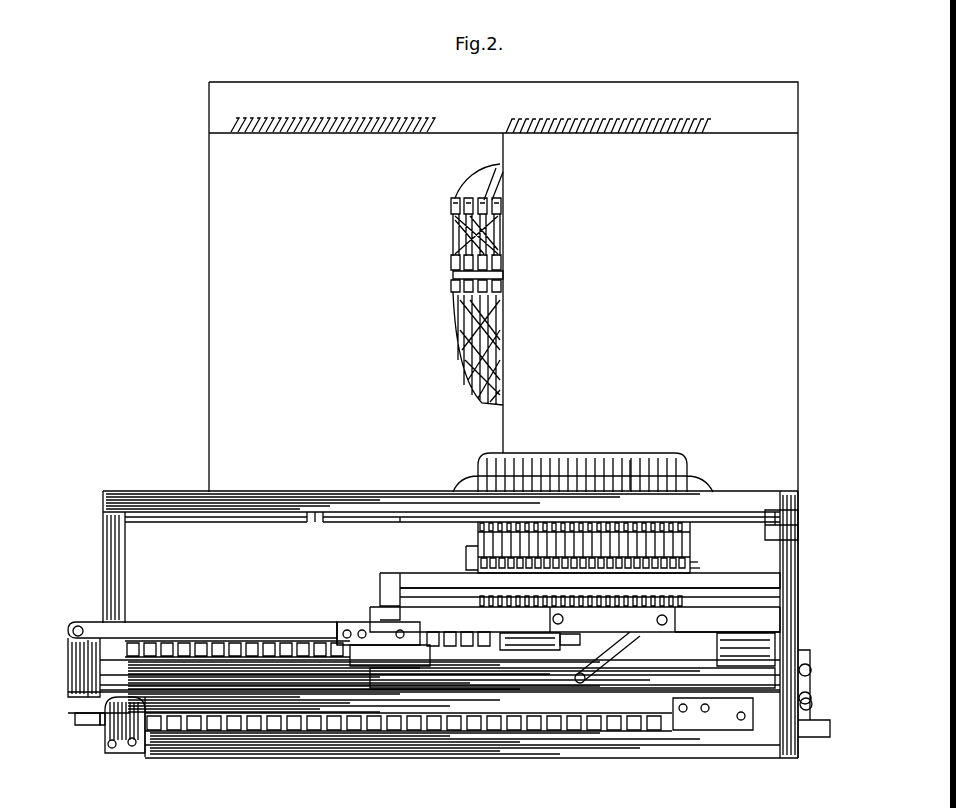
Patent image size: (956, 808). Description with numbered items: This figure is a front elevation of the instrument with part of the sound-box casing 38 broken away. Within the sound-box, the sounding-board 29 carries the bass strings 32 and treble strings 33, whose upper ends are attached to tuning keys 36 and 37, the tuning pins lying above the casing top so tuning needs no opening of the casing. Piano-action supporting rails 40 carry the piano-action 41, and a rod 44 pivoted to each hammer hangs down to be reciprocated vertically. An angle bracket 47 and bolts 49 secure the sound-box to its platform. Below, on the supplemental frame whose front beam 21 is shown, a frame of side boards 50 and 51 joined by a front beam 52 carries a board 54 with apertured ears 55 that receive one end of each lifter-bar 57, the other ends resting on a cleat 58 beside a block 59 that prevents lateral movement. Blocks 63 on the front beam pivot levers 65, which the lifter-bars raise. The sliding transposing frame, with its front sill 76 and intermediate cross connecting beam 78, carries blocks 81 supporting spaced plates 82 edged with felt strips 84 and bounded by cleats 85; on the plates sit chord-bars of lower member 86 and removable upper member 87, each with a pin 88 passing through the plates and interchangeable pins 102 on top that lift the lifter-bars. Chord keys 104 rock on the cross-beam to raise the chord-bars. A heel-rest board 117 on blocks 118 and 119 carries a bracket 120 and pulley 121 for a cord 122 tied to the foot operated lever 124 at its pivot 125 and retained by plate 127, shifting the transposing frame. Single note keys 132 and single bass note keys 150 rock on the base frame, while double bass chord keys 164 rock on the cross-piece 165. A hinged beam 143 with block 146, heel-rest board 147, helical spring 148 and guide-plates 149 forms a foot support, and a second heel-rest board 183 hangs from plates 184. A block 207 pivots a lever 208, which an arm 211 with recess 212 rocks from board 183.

The front beam 21 is at (440, 674).
The sounding-board 29 is at (478, 176).
The bass strings 32 is at (455, 196).
The treble strings 33 is at (495, 188).
The tuning keys 36 is at (368, 117).
The tuning keys 37 is at (628, 119).
The casing 38 is at (503, 420).
The piano-action supporting rails 40 is at (492, 278).
The piano-action 41 is at (490, 262).
The rod 44 is at (500, 360).
The angle bracket 47 is at (805, 660).
The bolts 49 is at (810, 718).
The side board 50 is at (118, 580).
The side board 51 is at (790, 572).
The front beam 52 is at (316, 491).
The board 54 is at (210, 522).
The apertured ears 55 is at (322, 524).
The lifter-bar 57 is at (406, 522).
The cleat 58 is at (778, 538).
The block 59 is at (778, 520).
The blocks 63 is at (632, 462).
The levers 65 is at (580, 462).
The front sill 76 is at (502, 660).
The intermediate cross connecting beam 78 is at (440, 650).
The blocks 81 is at (380, 598).
The plates 82 is at (410, 590).
The strips 84 is at (478, 560).
The cleats 85 is at (692, 552).
The lower chord-bar member 86 is at (700, 568).
The upper chord-bar member 87 is at (696, 562).
The pin 88 is at (494, 606).
The pins 102 is at (648, 528).
The chord keys 104 is at (574, 532).
The heel-rest board 117 is at (727, 620).
The block 118 is at (390, 655).
The block 119 is at (746, 649).
The bracket 120 is at (530, 639).
The pulley 121 is at (565, 648).
The cord 122 is at (596, 664).
The foot operated lever 124 is at (652, 632).
The pivot 125 is at (582, 684).
The plate 127 is at (576, 618).
The single note keys 132 is at (500, 730).
The beam 143 is at (268, 745).
The block 146 is at (734, 714).
The heel-rest board 147 is at (314, 703).
The helical spring 148 is at (150, 740).
The guide-plates 149 is at (122, 750).
The single bass note keys 150 is at (240, 730).
The double bass chord keys 164 is at (272, 638).
The cross-piece 165 is at (178, 622).
The heel-rest board 183 is at (309, 633).
The plates 184 is at (358, 622).
The block 207 is at (98, 728).
The lever 208 is at (86, 726).
The arm 211 is at (76, 668).
The recess 212 is at (80, 712).